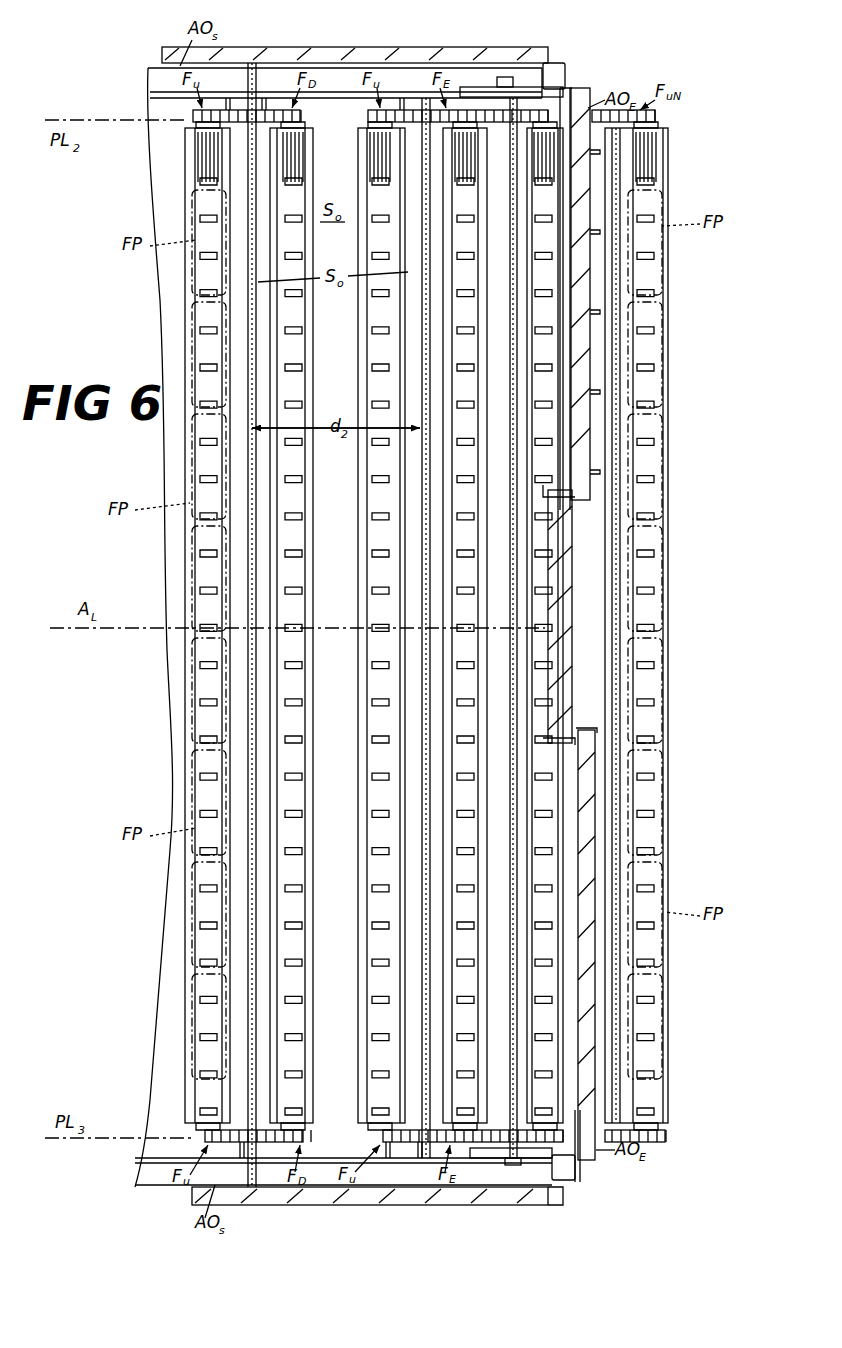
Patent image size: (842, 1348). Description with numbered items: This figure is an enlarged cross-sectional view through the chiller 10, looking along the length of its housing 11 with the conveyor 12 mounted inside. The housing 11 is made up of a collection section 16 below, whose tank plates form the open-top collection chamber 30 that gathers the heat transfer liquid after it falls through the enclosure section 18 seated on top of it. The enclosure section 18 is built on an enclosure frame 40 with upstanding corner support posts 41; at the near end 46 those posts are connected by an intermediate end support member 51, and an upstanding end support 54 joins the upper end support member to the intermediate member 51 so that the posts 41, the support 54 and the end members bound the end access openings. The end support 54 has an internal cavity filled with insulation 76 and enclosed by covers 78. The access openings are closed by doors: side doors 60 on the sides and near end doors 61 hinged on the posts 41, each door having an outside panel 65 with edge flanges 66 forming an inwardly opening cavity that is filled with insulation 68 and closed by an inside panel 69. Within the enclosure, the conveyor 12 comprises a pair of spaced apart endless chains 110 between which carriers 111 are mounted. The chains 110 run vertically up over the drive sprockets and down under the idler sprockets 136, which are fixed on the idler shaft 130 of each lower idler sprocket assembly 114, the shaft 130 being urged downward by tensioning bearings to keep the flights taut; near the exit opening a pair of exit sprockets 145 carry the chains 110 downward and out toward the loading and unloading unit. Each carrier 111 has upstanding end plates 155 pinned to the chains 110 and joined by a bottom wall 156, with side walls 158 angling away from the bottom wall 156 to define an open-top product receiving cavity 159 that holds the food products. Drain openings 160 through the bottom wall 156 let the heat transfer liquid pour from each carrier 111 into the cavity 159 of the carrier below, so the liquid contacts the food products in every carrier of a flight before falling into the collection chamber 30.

The chiller 10 is at (148, 28).
The housing 11 is at (146, 64).
The conveyor 12 is at (185, 113).
The collection section 16 is at (153, 140).
The enclosure section 18 is at (566, 60).
The collection chamber 30 is at (165, 195).
The enclosure frame 40 is at (566, 68).
The corner support posts 41 is at (551, 63).
The near end 46 is at (592, 310).
The intermediate end support member 51 is at (568, 765).
The upstanding end support 54 is at (572, 535).
The side doors 60 is at (423, 47).
The near end doors 61 is at (586, 95).
The outside panel 65 is at (342, 52).
The edge flanges 66 is at (538, 47).
The insulation 68 is at (300, 50).
The inside panel 69 is at (265, 48).
The insulation 76 is at (560, 565).
The covers 78 is at (555, 592).
The endless chains 110 is at (290, 116).
The carriers 111 is at (188, 283).
The lower idler sprocket assemblies 114 is at (227, 108).
The idler shaft 130 is at (245, 155).
The idler sprockets 136 is at (264, 108).
The exit sprockets 145 is at (500, 95).
The end plates 155 is at (300, 132).
The bottom wall 156 is at (375, 520).
The side walls 158 is at (375, 490).
The product receiving cavity 159 is at (300, 318).
The drain openings 160 is at (375, 358).